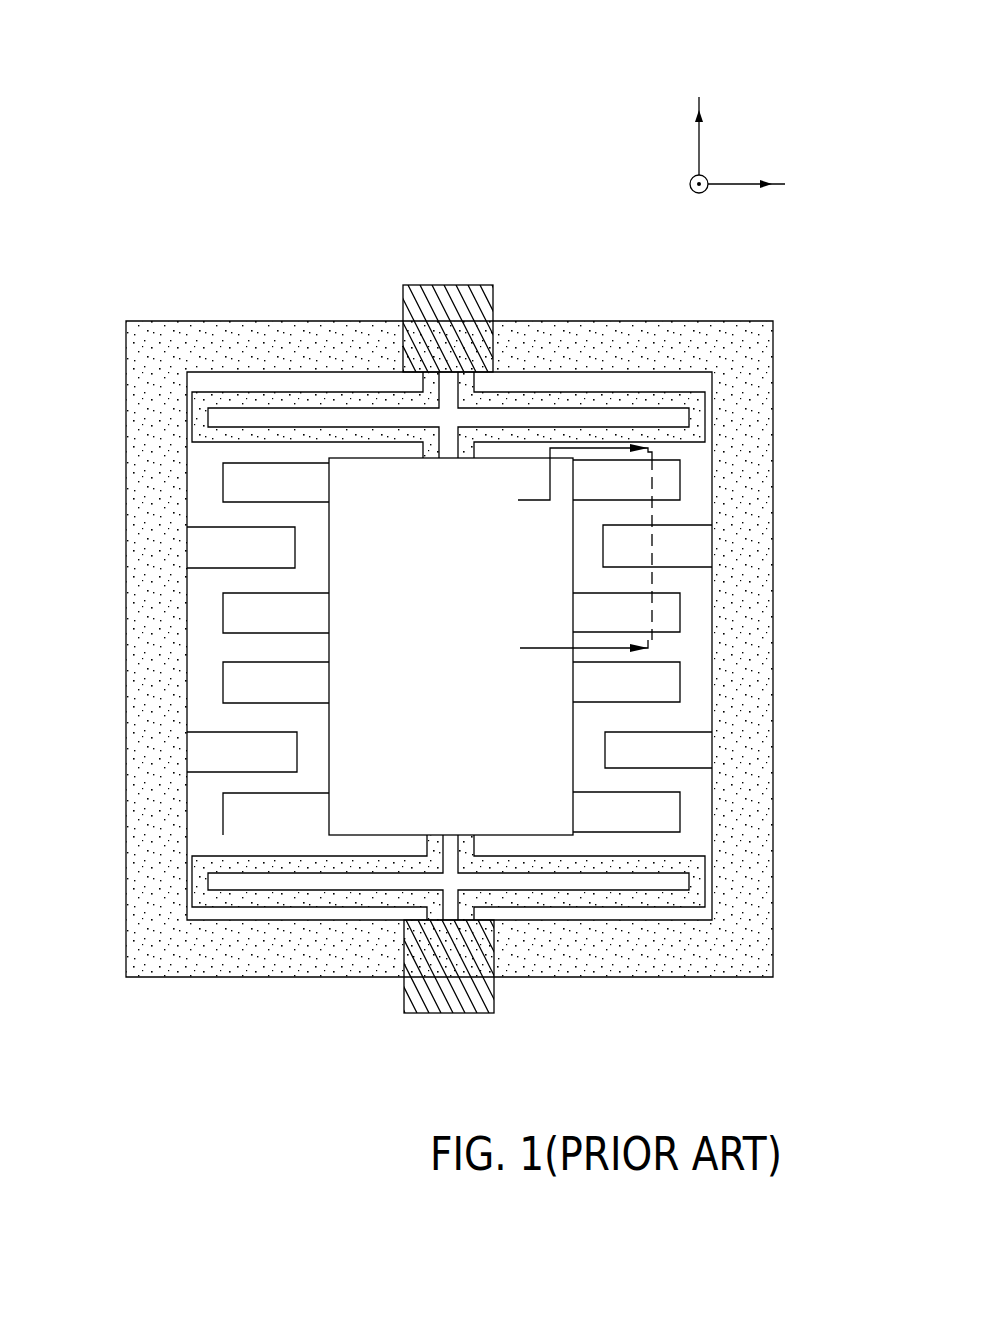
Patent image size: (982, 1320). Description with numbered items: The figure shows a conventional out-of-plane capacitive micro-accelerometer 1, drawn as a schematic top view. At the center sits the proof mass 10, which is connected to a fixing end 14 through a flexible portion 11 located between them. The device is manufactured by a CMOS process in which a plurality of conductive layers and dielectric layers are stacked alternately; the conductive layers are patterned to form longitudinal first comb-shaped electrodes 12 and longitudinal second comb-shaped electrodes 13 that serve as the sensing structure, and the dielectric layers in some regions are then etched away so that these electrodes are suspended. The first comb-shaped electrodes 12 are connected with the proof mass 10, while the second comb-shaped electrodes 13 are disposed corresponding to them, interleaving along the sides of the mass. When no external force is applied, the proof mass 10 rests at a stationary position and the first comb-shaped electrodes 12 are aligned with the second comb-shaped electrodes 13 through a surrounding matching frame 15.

The out-of-plane capacitive micro-accelerometer 1 is at (125, 55).
The proof mass 10 is at (547, 787).
The flexible portion 11 is at (310, 400).
The first comb-shaped electrode 12 is at (232, 482).
The second comb-shaped electrode 13 is at (220, 570).
The fixing end 14 is at (445, 285).
The matching frame 15 is at (135, 711).